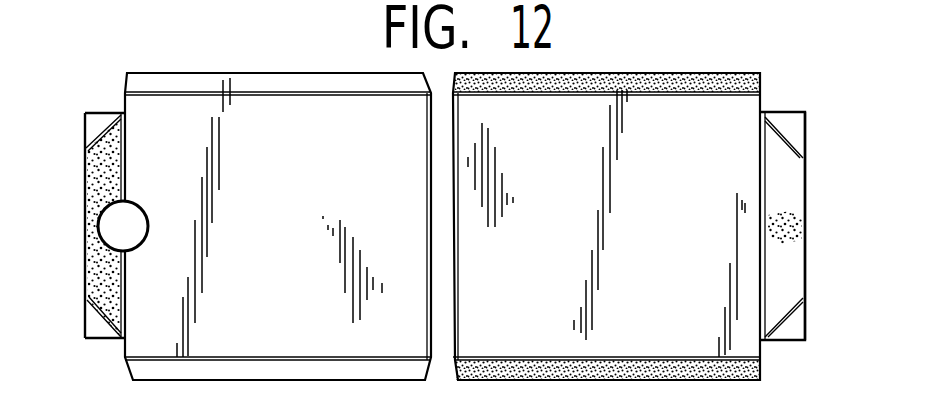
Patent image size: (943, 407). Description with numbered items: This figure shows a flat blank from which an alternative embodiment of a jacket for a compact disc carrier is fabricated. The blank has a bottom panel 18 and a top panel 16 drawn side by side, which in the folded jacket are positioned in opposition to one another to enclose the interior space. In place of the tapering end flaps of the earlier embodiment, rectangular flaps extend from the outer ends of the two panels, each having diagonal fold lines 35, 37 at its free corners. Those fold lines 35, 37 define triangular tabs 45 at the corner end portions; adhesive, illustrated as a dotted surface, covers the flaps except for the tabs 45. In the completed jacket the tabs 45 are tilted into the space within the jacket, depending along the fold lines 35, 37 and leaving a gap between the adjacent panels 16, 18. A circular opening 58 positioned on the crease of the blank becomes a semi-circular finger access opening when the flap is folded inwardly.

The top panel 16 is at (563, 247).
The bottom panel 18 is at (287, 249).
The diagonal fold lines 35 is at (792, 142).
The diagonal fold lines 37 is at (92, 144).
The triangular tabs 45 is at (96, 111).
The circular opening 58 is at (132, 245).